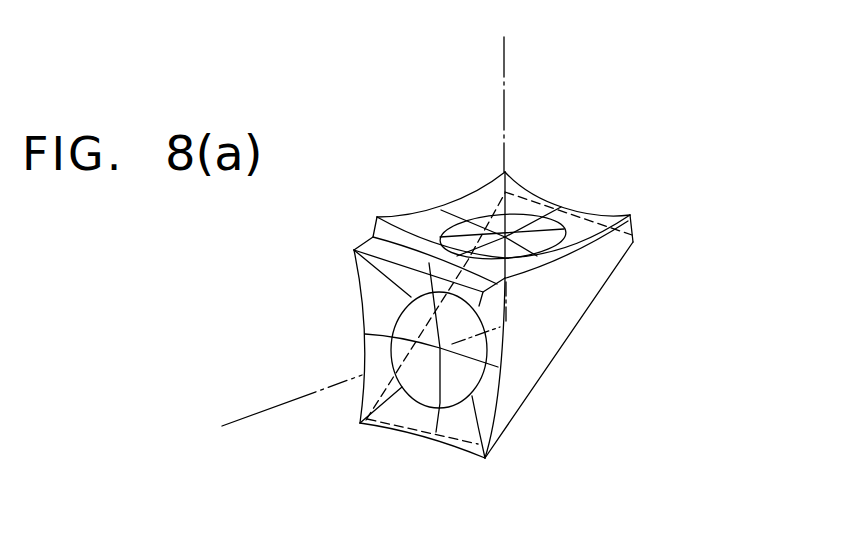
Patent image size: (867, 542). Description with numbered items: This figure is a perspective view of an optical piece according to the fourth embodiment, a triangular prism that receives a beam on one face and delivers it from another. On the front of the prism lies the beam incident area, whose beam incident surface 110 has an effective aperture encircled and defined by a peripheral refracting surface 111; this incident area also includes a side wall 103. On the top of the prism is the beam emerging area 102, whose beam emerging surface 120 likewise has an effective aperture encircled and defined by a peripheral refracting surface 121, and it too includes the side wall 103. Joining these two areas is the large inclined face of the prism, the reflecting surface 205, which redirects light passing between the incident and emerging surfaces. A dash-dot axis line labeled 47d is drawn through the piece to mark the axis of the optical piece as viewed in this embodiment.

The optical axis 47d is at (505, 67).
The light receiving top face 102 is at (466, 208).
The optical element body 103 is at (333, 270).
The front lens surface 110 is at (423, 387).
The front face 111 is at (440, 348).
The top lens surface 120 is at (524, 226).
The top face edge surface 121 is at (588, 216).
The side surface 205 is at (588, 290).